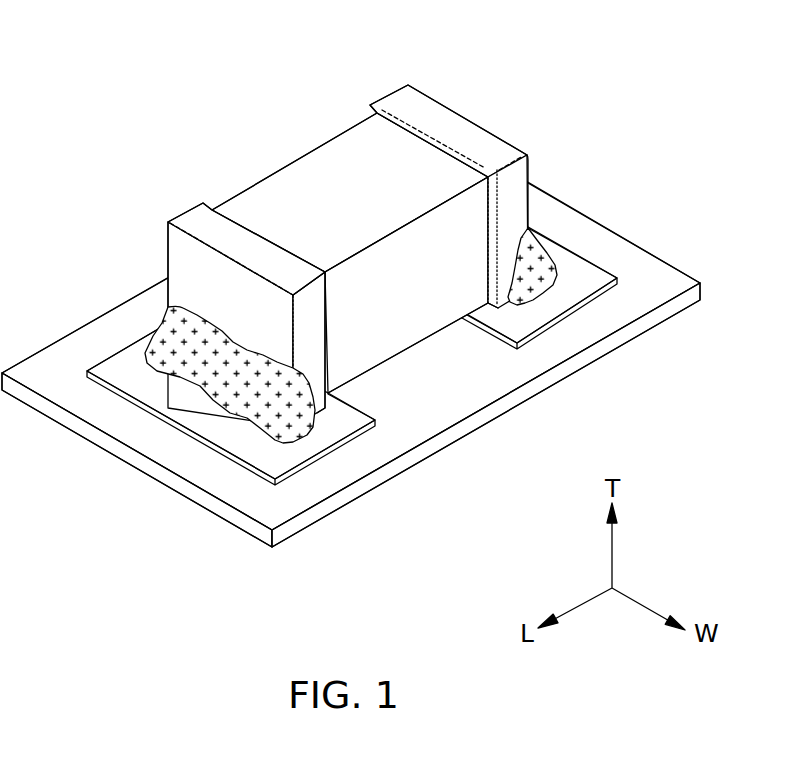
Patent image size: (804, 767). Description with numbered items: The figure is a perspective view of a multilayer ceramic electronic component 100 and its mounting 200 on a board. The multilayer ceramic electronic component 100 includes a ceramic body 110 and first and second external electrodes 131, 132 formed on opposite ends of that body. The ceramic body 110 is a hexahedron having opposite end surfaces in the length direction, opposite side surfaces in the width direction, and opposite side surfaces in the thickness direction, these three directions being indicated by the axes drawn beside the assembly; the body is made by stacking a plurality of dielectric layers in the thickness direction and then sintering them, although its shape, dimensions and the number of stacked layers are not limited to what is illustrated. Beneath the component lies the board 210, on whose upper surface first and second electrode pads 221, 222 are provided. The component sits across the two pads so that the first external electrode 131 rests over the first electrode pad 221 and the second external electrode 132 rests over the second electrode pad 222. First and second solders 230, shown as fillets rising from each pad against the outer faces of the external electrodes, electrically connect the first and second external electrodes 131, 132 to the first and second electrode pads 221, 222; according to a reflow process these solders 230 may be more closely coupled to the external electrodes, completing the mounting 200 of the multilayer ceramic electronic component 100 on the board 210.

The mounting 200 is at (351, 288).
The multilayer ceramic electronic component 100 is at (333, 229).
The ceramic body 110 is at (305, 180).
The first external electrode 131 is at (200, 223).
The second external electrode 132 is at (400, 108).
The board 210 is at (460, 383).
The first electrode pad 221 is at (322, 433).
The second electrode pad 222 is at (563, 293).
The solders 230 is at (210, 373).